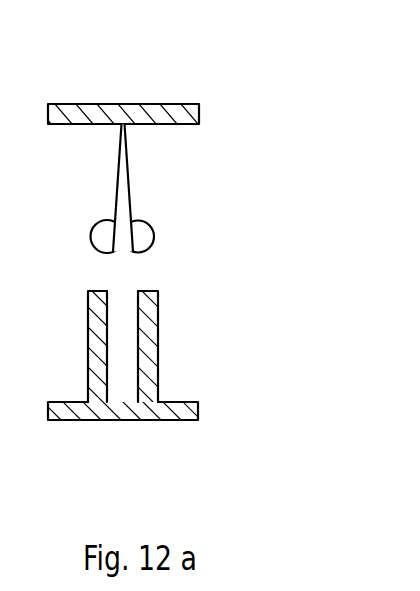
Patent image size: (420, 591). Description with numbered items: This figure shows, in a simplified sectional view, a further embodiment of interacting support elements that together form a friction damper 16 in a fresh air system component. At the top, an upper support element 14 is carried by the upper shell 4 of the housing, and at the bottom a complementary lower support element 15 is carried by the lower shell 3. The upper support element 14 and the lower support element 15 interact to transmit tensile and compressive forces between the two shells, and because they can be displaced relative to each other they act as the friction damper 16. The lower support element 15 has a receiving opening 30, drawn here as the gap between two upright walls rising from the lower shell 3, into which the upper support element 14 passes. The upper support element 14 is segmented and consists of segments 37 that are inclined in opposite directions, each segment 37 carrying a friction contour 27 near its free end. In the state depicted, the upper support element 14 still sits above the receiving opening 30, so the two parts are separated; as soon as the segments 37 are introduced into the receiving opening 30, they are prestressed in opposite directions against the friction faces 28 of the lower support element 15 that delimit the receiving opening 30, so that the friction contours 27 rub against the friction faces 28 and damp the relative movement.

The lower shell 3 is at (80, 426).
The upper shell 4 is at (103, 100).
The upper support element 14 is at (137, 188).
The lower support element 15 is at (131, 405).
The friction damper 16 is at (181, 130).
The friction contour 27 is at (103, 235).
The friction faces 28 is at (136, 349).
The receiving opening 30 is at (123, 377).
The segments 37 is at (128, 170).